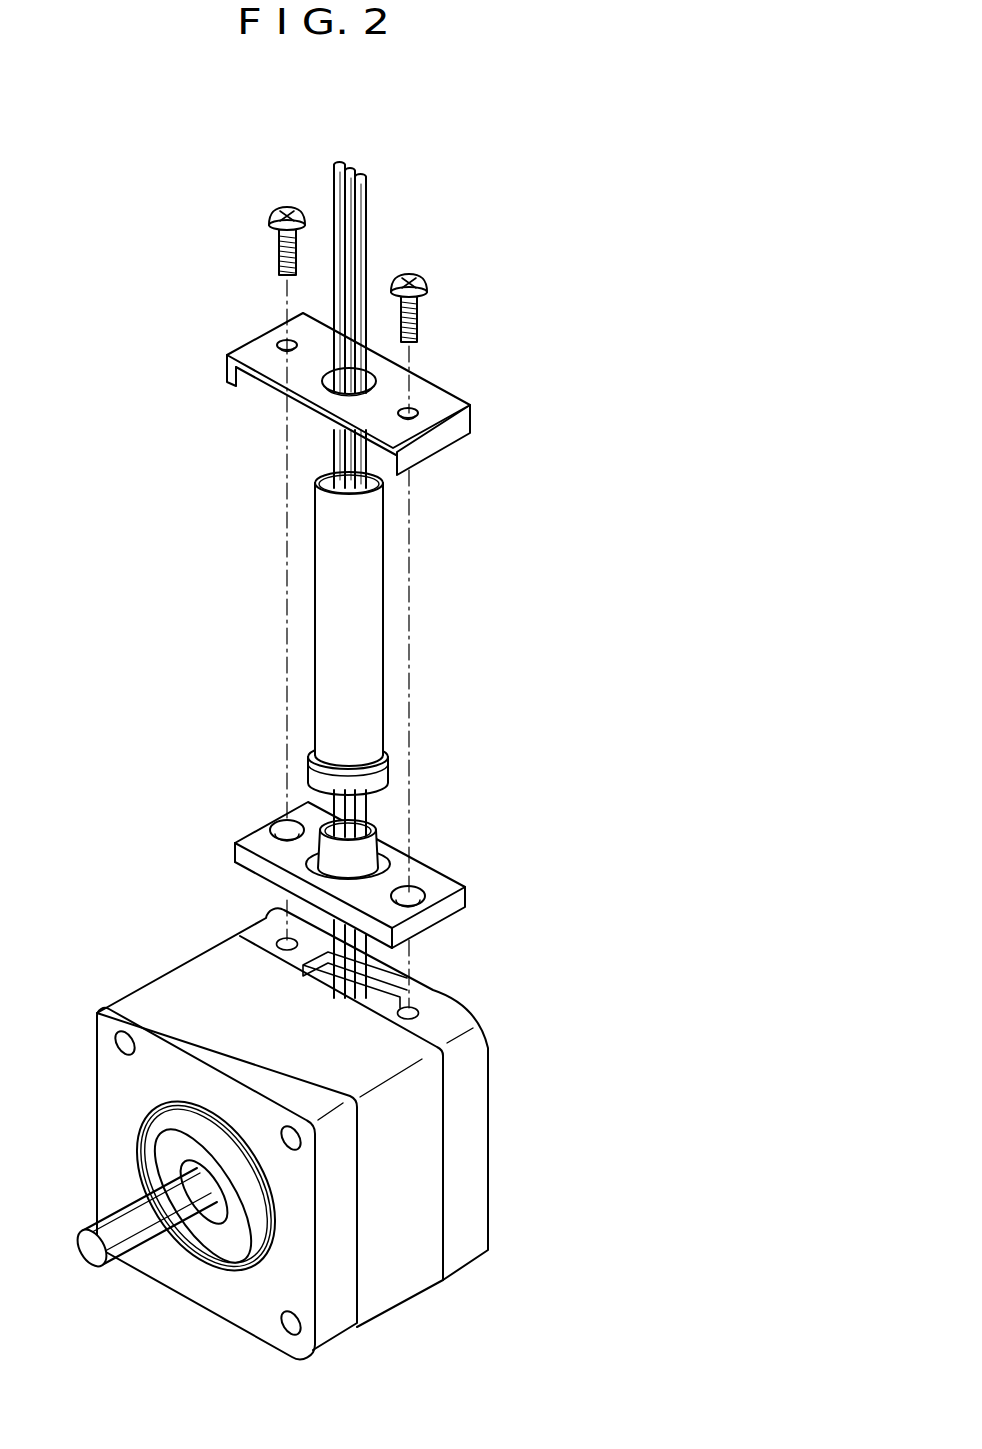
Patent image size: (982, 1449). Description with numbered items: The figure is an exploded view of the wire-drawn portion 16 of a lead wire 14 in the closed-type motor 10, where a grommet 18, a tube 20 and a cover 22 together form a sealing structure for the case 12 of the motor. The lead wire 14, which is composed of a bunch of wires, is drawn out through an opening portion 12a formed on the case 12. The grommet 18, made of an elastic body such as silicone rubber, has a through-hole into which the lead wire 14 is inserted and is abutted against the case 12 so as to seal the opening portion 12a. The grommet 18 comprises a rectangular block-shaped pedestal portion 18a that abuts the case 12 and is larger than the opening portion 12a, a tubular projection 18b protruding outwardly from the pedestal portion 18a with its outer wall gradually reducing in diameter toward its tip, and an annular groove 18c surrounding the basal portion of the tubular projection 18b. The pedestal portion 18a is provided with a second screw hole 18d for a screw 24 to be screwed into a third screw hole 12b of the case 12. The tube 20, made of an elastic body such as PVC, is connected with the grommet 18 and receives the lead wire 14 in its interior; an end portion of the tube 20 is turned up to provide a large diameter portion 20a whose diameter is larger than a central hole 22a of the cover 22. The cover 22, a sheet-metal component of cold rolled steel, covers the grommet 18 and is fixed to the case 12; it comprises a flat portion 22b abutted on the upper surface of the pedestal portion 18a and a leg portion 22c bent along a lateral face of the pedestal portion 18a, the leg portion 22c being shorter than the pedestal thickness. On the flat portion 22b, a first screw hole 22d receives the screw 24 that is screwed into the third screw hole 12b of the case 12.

The closed-type motor 10 is at (640, 508).
The case 12 is at (490, 1142).
The opening portion 12a is at (398, 990).
The third screw hole 12b is at (277, 945).
The lead wire 14 is at (377, 202).
The wire-drawn portion 16 is at (446, 944).
The grommet 18 is at (495, 868).
The pedestal portion 18a is at (428, 862).
The tubular projection 18b is at (380, 833).
The annular groove 18c is at (233, 849).
The second screw hole 18d is at (283, 822).
The tube 20 is at (395, 603).
The large diameter portion 20a is at (387, 762).
The cover 22 is at (455, 368).
The central hole 22a is at (312, 380).
The flat portion 22b is at (258, 378).
The leg portion 22c is at (475, 422).
The first screw hole 22d is at (282, 340).
The screw 24 is at (290, 206).